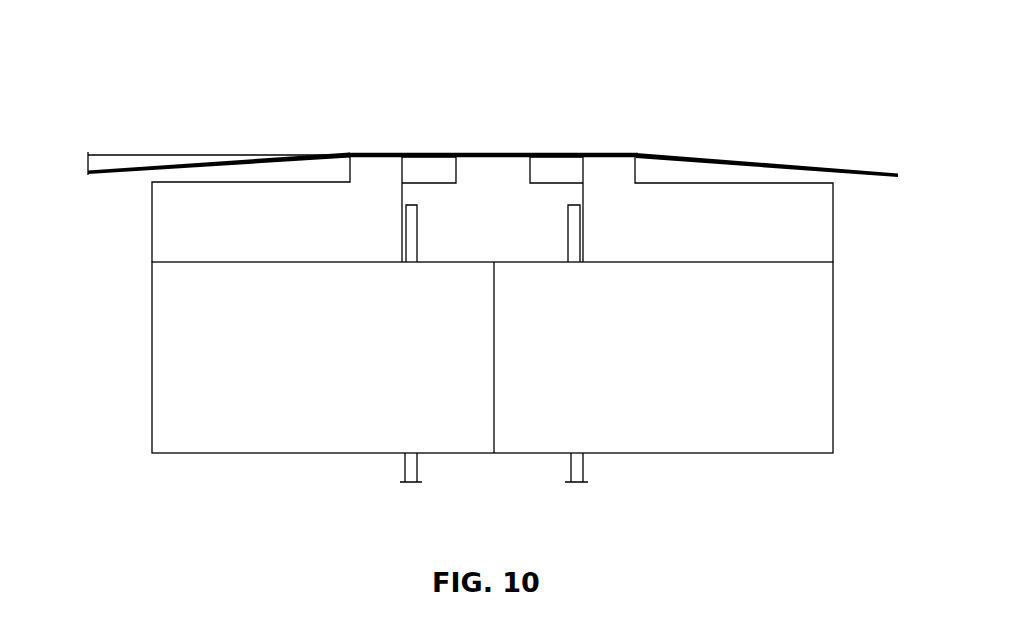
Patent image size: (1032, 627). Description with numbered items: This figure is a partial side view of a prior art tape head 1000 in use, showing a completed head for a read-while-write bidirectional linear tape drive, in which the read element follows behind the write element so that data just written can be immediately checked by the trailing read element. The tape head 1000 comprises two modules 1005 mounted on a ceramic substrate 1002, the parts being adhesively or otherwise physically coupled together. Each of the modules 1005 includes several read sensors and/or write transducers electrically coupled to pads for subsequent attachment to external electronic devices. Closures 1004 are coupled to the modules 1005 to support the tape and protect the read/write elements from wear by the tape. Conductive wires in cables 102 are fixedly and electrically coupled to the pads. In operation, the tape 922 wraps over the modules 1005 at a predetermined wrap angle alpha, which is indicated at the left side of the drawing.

The tape head 1000 is at (158, 112).
The tape 922 is at (778, 163).
The closures 1004 is at (460, 167).
The modules 1005 is at (152, 228).
The ceramic substrate 1002 is at (152, 333).
The cables 102 is at (418, 216).